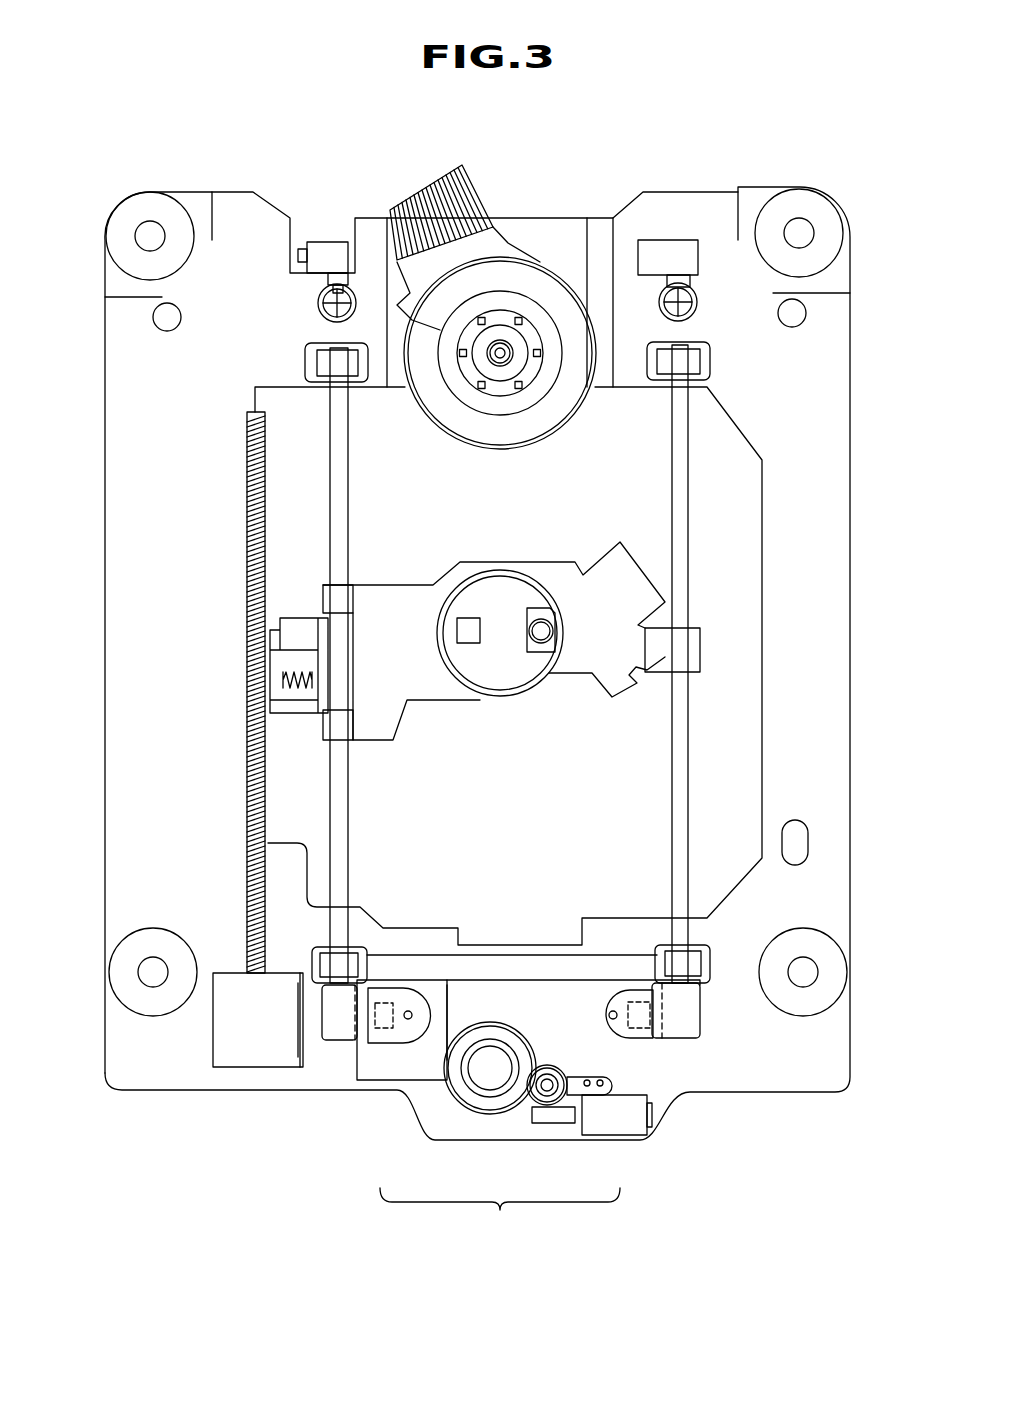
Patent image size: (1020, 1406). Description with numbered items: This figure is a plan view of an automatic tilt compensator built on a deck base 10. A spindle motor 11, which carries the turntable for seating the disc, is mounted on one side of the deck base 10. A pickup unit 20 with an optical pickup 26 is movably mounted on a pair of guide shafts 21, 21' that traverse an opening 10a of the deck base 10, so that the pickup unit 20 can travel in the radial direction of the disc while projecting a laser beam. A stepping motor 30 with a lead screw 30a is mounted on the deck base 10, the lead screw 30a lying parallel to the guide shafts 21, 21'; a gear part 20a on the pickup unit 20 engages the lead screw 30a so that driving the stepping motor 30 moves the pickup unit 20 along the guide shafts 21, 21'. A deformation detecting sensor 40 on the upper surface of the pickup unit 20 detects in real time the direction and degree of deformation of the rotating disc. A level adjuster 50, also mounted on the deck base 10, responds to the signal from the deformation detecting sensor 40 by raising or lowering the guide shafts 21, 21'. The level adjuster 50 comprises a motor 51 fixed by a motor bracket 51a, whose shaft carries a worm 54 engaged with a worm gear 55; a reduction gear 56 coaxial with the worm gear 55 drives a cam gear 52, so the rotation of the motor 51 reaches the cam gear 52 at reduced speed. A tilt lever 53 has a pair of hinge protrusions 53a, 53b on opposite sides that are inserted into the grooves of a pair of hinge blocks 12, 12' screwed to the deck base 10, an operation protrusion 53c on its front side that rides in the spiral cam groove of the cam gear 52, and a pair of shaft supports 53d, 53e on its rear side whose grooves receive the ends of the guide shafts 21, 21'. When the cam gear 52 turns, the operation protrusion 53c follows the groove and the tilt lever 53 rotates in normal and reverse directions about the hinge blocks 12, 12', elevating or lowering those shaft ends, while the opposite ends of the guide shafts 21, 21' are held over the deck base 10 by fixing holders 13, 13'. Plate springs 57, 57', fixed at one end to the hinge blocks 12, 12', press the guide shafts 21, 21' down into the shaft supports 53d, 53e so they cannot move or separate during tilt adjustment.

The deck base 10 is at (850, 500).
The opening 10a is at (621, 858).
The spindle motor 11 is at (527, 283).
The hinge block 12 is at (350, 1084).
The hinge block 12' is at (684, 1059).
The fixing holder 13 is at (214, 379).
The fixing holder 13' is at (778, 356).
The pickup unit 20 is at (648, 578).
The gear part 20a is at (278, 668).
The guide shaft 21 is at (204, 665).
The guide shaft 21' is at (791, 664).
The optical pickup 26 is at (537, 607).
The stepping motor 30 is at (223, 1040).
The lead screw 30a is at (258, 748).
The deformation detecting sensor 40 is at (463, 643).
The level adjuster 50 is at (500, 1214).
The motor 51 is at (600, 1115).
The motor bracket 51a is at (612, 1080).
The cam gear 52 is at (463, 1105).
The tilt lever 53 is at (406, 1070).
The hinge protrusion 53a is at (381, 1008).
The hinge protrusion 53b is at (639, 1017).
The operation protrusion 53c is at (465, 1025).
The shaft support 53d is at (318, 962).
The shaft support 53e is at (697, 966).
The worm 54 is at (549, 1122).
The worm gear 55 is at (565, 1068).
The reduction gear 56 is at (545, 1065).
The plate spring 57 is at (271, 1064).
The plate spring 57' is at (731, 1062).